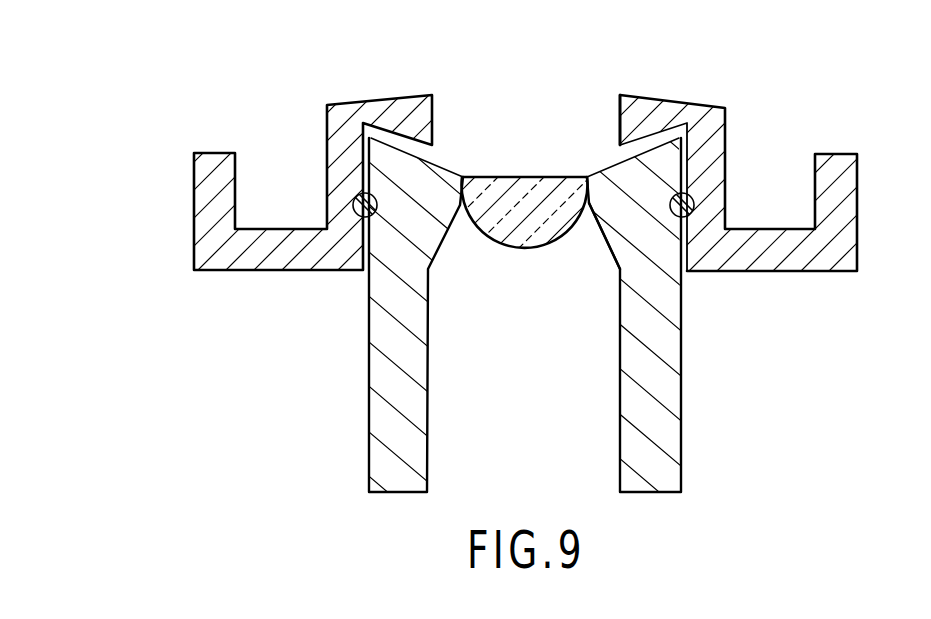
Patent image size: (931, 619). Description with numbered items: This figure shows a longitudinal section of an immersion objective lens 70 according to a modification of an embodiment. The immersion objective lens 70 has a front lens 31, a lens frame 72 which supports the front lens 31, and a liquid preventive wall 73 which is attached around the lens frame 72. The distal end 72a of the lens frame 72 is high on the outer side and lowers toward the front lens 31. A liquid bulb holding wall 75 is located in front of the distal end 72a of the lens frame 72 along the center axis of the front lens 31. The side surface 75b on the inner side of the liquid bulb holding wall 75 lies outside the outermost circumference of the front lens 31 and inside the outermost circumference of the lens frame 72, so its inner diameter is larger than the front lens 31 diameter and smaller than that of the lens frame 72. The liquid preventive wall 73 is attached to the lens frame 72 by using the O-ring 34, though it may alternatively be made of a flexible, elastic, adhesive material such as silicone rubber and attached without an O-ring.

The immersion objective lens 70 is at (518, 88).
The front lens 31 is at (518, 192).
The O-ring 34 is at (616, 262).
The lens frame 72 is at (681, 413).
The distal end 72a is at (446, 168).
The liquid preventive wall 73 is at (194, 202).
The liquid bulb holding wall 75 is at (658, 97).
The side surface 75b is at (620, 118).